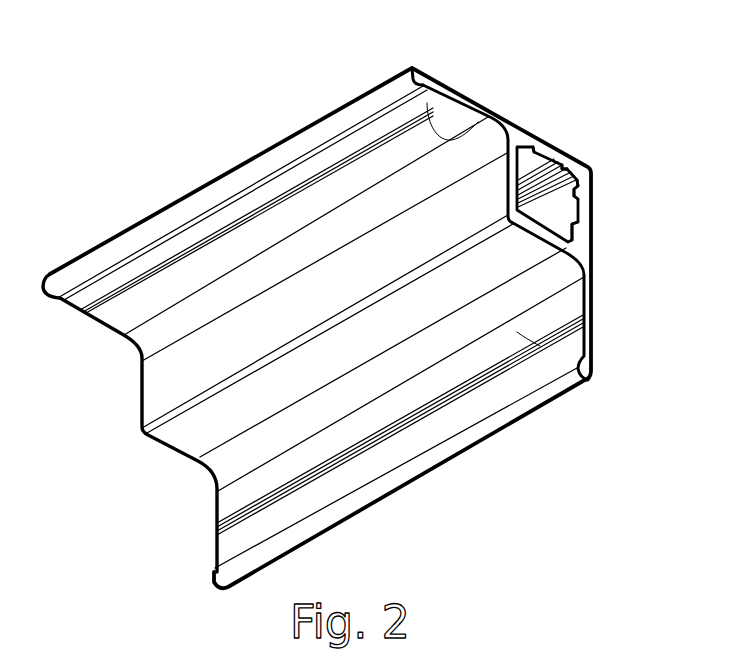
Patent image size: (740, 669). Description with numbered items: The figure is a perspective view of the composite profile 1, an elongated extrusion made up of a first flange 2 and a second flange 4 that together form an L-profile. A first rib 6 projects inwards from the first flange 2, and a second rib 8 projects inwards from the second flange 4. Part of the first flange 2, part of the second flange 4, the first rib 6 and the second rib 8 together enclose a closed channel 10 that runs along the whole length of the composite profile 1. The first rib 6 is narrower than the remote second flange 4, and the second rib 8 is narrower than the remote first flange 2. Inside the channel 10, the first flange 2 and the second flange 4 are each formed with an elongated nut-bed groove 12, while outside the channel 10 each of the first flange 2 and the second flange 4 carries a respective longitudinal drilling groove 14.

The composite profile 1 is at (198, 157).
The first flange 2 is at (428, 104).
The second flange 4 is at (586, 300).
The first rib 6 is at (538, 175).
The second rib 8 is at (513, 257).
The closed channel 10 is at (595, 165).
The nut-bed groove 12 is at (554, 197).
The drilling groove 14 is at (497, 197).